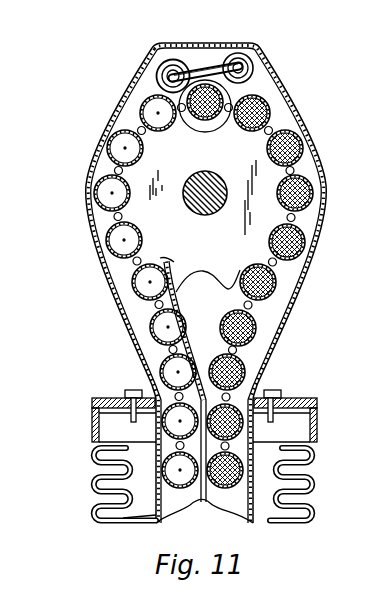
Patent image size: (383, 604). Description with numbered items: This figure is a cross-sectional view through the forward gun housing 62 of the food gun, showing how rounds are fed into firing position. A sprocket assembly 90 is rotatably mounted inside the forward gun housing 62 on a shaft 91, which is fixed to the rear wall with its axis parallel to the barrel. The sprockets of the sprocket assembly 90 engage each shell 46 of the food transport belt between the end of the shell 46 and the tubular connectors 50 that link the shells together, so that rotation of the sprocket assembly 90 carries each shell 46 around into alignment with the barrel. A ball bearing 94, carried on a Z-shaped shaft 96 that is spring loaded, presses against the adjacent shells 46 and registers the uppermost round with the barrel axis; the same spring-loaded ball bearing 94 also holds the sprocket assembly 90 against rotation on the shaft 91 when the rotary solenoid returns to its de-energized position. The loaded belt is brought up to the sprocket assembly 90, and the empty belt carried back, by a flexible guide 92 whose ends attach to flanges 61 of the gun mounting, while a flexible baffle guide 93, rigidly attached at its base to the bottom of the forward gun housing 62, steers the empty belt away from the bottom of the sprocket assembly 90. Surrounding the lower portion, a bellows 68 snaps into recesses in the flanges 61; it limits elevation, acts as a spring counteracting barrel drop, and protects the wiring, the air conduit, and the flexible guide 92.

The ball bearing 94 is at (170, 60).
The Z-shaped shaft 96 is at (215, 66).
The shell 46 is at (233, 90).
The forward gun housing 62 is at (300, 118).
The sprocket assembly 90 is at (263, 178).
The tubular connectors 50 is at (106, 176).
The shaft 91 is at (178, 200).
The flexible baffle guide 93 is at (160, 306).
The flange 61 is at (305, 397).
The bellows 68 is at (97, 455).
The flexible guide 92 is at (253, 508).